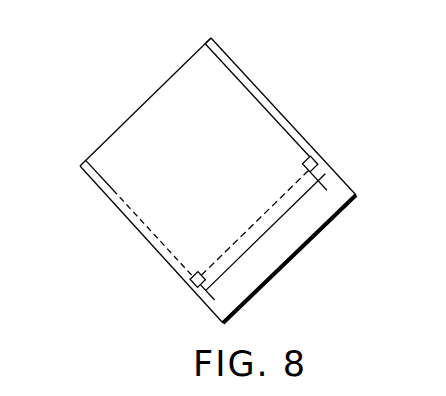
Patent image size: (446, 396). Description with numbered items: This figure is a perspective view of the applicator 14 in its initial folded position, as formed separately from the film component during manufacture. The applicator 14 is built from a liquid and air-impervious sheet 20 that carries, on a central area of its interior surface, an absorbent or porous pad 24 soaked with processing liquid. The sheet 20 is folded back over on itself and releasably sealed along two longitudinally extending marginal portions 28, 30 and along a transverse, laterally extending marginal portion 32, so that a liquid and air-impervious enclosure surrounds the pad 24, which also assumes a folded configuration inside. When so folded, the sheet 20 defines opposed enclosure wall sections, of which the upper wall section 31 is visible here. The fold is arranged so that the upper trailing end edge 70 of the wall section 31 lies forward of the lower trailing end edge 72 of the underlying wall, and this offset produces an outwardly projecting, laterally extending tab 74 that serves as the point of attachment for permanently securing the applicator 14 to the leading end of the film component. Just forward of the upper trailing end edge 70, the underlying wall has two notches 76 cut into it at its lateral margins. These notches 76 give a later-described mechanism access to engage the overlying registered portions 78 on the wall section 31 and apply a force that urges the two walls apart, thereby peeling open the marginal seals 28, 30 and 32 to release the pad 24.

The applicator 14 is at (207, 182).
The sheet 20 is at (80, 166).
The pad 24 is at (202, 71).
The marginal portion 28 is at (133, 226).
The marginal portion 30 is at (261, 90).
The wall section 31 is at (145, 122).
The marginal portion 32 is at (279, 209).
The upper trailing end edge 70 is at (241, 256).
The lower trailing end edge 72 is at (289, 258).
The tab 74 is at (330, 205).
The notches 76 is at (318, 165).
The registered portions 78 is at (316, 158).